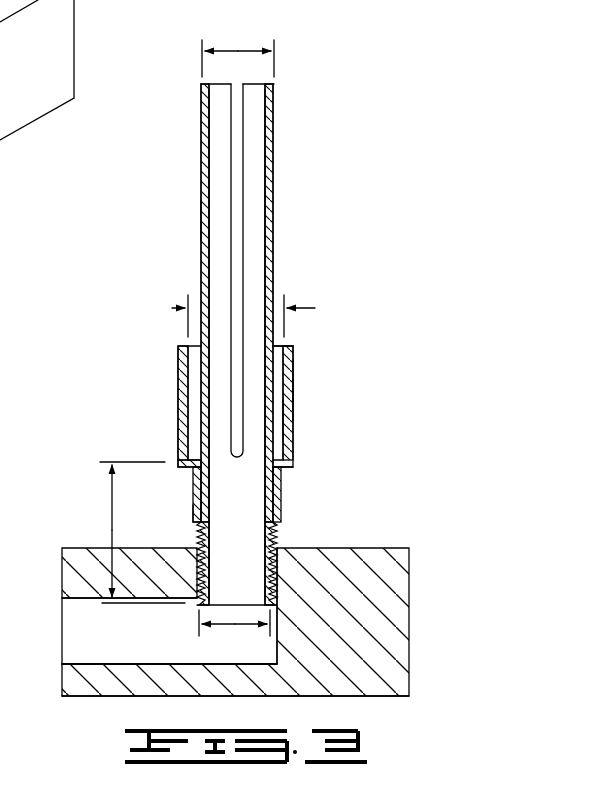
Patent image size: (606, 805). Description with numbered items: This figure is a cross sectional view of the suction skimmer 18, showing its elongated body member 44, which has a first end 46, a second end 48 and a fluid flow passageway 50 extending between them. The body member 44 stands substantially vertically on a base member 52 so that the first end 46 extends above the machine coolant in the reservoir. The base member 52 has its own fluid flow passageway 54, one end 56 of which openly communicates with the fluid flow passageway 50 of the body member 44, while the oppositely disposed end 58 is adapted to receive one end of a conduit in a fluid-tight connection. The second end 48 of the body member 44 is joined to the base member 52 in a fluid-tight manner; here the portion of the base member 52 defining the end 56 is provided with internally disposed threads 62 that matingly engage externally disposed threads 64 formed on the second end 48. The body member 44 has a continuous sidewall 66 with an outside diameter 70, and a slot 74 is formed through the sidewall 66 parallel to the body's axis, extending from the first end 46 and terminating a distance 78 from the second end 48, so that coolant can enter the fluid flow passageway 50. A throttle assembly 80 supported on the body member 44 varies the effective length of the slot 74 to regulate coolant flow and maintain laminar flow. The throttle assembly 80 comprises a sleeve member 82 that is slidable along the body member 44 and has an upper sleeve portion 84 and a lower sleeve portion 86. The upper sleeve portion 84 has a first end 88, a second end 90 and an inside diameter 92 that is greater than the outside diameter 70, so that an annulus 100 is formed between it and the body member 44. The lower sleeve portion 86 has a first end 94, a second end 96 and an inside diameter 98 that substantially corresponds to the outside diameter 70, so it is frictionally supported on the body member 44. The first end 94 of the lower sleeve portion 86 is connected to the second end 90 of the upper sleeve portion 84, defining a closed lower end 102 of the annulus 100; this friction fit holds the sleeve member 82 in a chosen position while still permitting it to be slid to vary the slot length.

The suction skimmer 18 is at (301, 171).
The elongated body member 44 is at (275, 232).
The first end 46 is at (275, 90).
The second end 48 is at (276, 578).
The fluid flow passageway 50 is at (253, 150).
The base member 52 is at (375, 548).
The fluid flow passageway 54 is at (108, 652).
The one end 56 is at (277, 645).
The oppositely disposed end 58 is at (62, 628).
The internally disposed threads 62 is at (277, 560).
The externally disposed threads 64 is at (198, 580).
The continuous sidewall 66 is at (200, 218).
The outside diameter 70 is at (243, 51).
The slot 74 is at (237, 168).
The distance 78 is at (112, 530).
The throttle assembly 80 is at (161, 357).
The sleeve member 82 is at (299, 402).
The upper sleeve portion 84 is at (296, 418).
The lower sleeve portion 86 is at (281, 485).
The first end 88 is at (294, 361).
The second end 90 is at (294, 455).
The inside diameter 92 is at (166, 307).
The first end 94 is at (193, 471).
The second end 96 is at (193, 516).
The inside diameter 98 is at (232, 624).
The annulus 100 is at (294, 378).
The closed lower end 102 is at (198, 463).